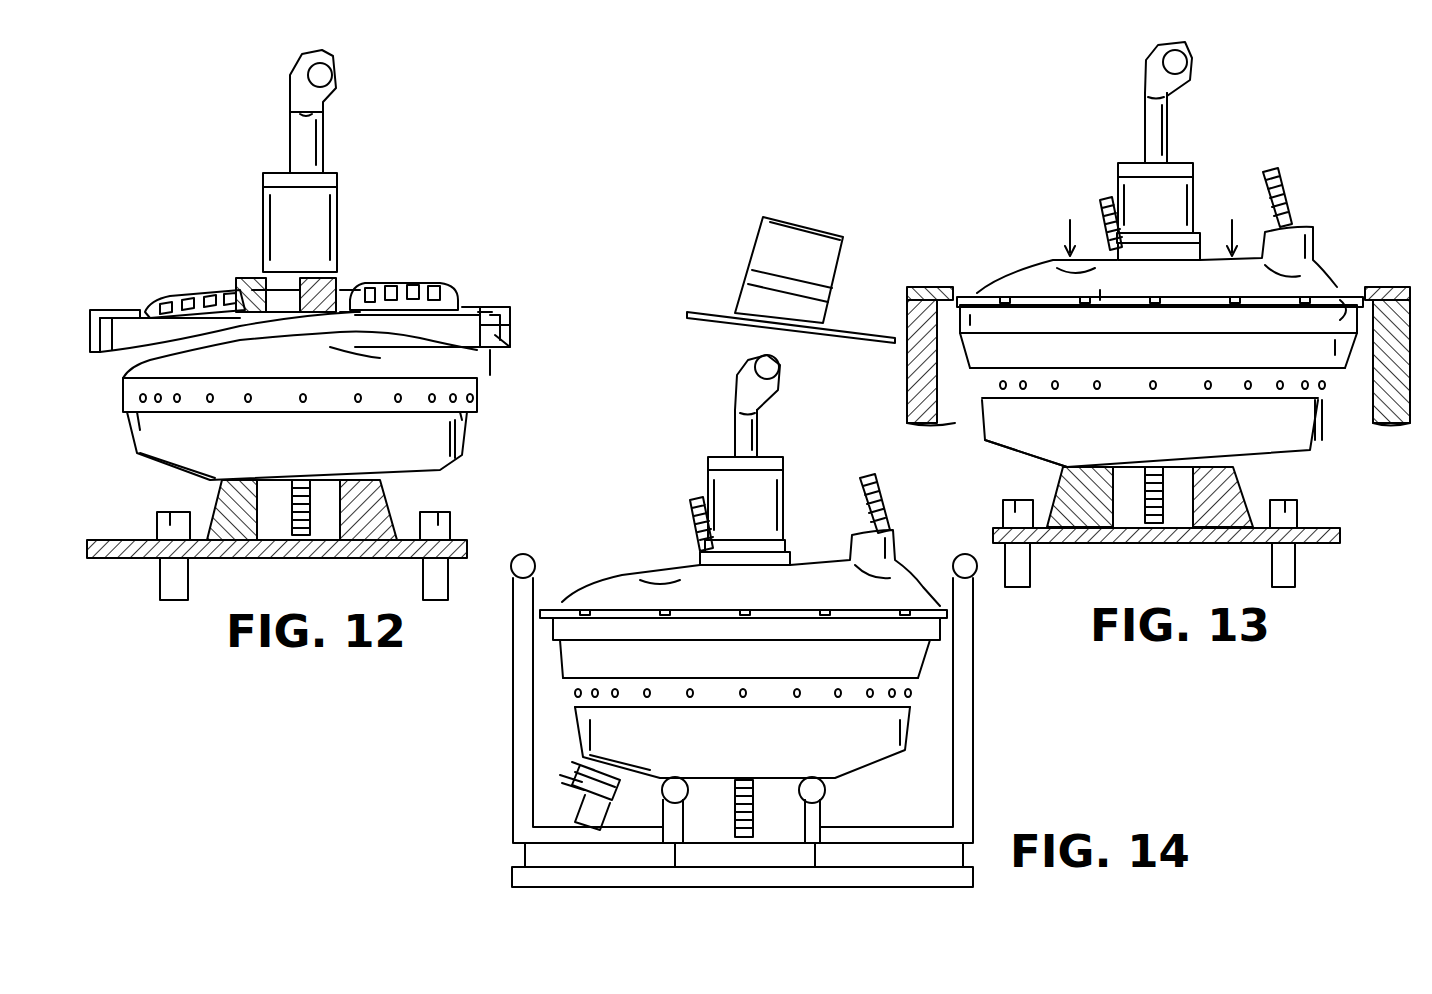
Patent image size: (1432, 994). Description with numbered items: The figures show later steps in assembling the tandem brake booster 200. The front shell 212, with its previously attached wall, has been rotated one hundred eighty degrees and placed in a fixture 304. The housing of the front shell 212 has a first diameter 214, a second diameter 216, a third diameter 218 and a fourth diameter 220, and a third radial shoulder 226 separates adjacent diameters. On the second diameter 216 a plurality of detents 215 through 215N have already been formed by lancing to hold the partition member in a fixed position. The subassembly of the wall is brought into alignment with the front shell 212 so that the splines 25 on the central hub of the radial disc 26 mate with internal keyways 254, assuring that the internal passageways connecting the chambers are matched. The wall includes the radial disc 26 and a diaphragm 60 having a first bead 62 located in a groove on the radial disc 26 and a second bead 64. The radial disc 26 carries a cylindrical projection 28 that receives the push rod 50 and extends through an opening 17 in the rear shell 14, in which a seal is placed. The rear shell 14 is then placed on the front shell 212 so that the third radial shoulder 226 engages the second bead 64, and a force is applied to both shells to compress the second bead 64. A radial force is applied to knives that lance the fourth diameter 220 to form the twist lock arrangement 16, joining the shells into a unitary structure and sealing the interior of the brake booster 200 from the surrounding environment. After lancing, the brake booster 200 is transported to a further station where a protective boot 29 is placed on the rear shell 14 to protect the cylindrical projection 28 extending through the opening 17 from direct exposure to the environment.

In FIG. 12, the rear shell 14 is at (301, 346).
In FIG. 13, the rear shell 14 is at (995, 290).
In FIG. 14, the rear shell 14 is at (600, 592).
In FIG. 13, the twist lock arrangement 16 is at (1352, 405).
In FIG. 13, the opening 17 is at (1196, 209).
In FIG. 14, the opening 17 is at (783, 540).
In FIG. 12, the spline 25 is at (352, 280).
In FIG. 12, the radial disc 26 is at (185, 292).
In FIG. 12, the cylindrical projection 28 is at (300, 222).
In FIG. 13, the cylindrical projection 28 is at (1125, 192).
In FIG. 14, the cylindrical projection 28 is at (785, 495).
In FIG. 14, the protective boot 29 is at (775, 222).
In FIG. 12, the push rod 50 is at (313, 111).
In FIG. 13, the push rod 50 is at (1170, 106).
In FIG. 14, the push rod 50 is at (757, 406).
In FIG. 12, the diaphragm 60 is at (493, 312).
In FIG. 12, the first bead 62 is at (470, 306).
In FIG. 12, the second bead 64 is at (512, 326).
In FIG. 13, the tandem brake booster 200 is at (1338, 196).
In FIG. 14, the tandem brake booster 200 is at (556, 717).
In FIG. 12, the front shell 212 is at (432, 470).
In FIG. 13, the front shell 212 is at (1035, 450).
In FIG. 12, the first diameter 214 is at (460, 445).
In FIG. 12, the detent 215 is at (475, 400).
In FIG. 13, the detent 215 is at (1322, 390).
In FIG. 12, the detent 215N is at (468, 412).
In FIG. 13, the detent 215N is at (1318, 440).
In FIG. 12, the second diameter 216 is at (134, 416).
In FIG. 12, the third diameter 218 is at (494, 360).
In FIG. 12, the fourth diameter 220 is at (508, 310).
In FIG. 13, the fourth diameter 220 is at (1352, 295).
In FIG. 12, the third radial shoulder 226 is at (506, 338).
In FIG. 12, the internal keyway 254 is at (405, 284).
In FIG. 12, the fixture 304 is at (208, 512).
In FIG. 13, the fixture 304 is at (1228, 488).